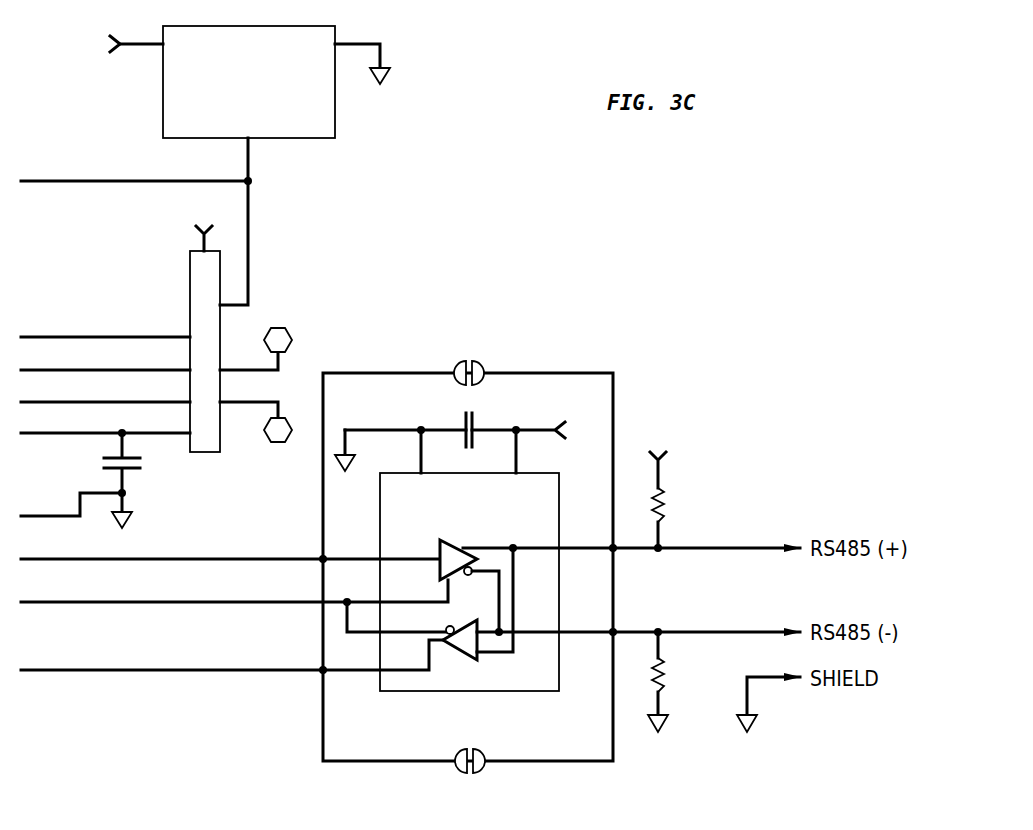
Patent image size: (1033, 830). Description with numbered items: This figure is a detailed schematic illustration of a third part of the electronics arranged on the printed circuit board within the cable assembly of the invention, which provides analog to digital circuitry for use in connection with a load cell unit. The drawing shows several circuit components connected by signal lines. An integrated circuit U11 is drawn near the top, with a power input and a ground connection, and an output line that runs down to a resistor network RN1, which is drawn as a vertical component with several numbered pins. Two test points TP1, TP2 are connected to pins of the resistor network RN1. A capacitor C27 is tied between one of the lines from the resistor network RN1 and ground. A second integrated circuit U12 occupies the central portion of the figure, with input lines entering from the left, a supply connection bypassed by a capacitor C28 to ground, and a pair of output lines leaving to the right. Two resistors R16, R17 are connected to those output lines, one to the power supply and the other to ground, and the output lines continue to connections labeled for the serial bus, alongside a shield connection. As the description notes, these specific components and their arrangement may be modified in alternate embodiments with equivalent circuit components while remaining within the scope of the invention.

The undervoltage sensing circuit (34064) U11 is at (240, 161).
The RS-485 transceiver (LTC485CSB) U12 is at (410, 560).
The resistor network 5X4.7K RN1 is at (122, 324).
The test point 1 TP1 is at (258, 336).
The test point 2 TP2 is at (258, 438).
The capacitor .1 C27 is at (103, 478).
The capacitor .1 C28 is at (473, 437).
The pull-up resistor 24K R16 is at (681, 488).
The pull-down resistor 24K R17 is at (685, 680).